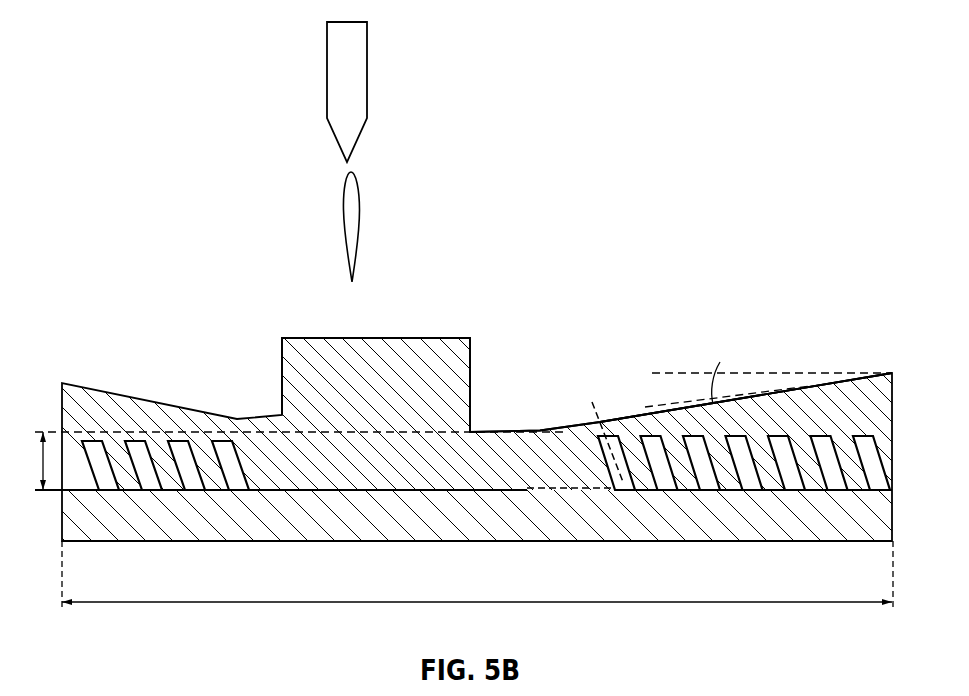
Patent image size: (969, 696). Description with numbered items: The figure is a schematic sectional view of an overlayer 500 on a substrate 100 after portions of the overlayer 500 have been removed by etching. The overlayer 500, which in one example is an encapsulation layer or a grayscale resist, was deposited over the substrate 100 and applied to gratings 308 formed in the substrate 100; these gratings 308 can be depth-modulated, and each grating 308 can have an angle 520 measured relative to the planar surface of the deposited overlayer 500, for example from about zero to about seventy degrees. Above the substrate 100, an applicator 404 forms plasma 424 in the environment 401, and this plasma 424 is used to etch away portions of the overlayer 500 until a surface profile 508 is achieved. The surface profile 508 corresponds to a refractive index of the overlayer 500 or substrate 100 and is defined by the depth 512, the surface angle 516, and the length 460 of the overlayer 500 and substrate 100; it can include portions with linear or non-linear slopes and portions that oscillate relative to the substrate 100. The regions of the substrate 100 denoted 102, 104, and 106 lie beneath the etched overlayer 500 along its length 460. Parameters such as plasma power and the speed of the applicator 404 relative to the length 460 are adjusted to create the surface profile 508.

The substrate 100 is at (433, 529).
The first region of substrate 102 is at (156, 558).
The second region of substrate 104 is at (745, 483).
The third region of substrate 106 is at (745, 431).
The gratings 308 is at (818, 425).
The environment 401 is at (468, 178).
The applicator 404 is at (313, 68).
The plasma 424 is at (321, 216).
The length 460 is at (355, 604).
The overlayer 500 is at (393, 405).
The surface profile 508 is at (762, 281).
The depth 512 is at (45, 462).
The surface angle 516 is at (683, 365).
The angle 520 is at (586, 497).